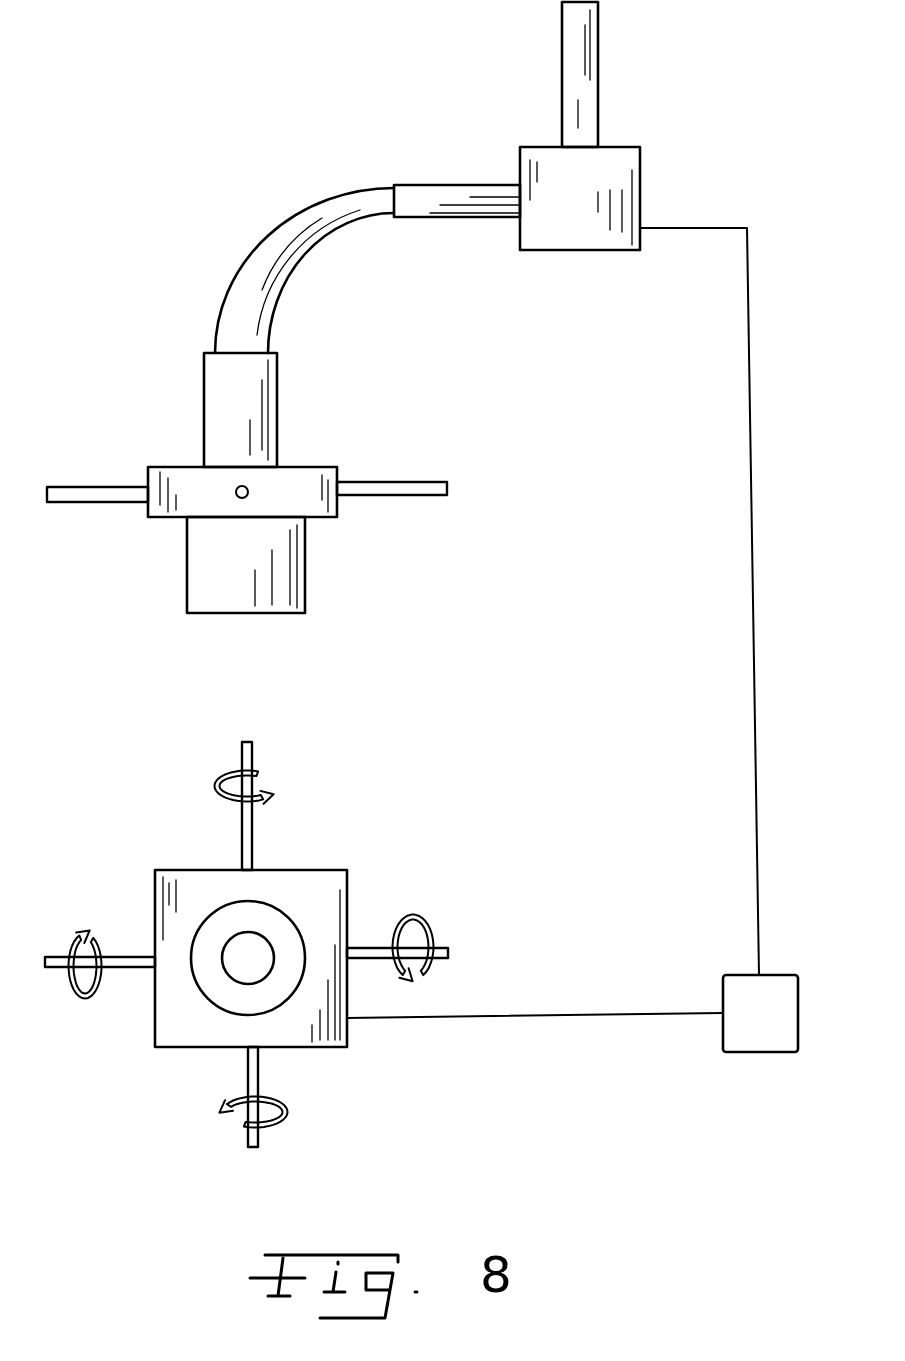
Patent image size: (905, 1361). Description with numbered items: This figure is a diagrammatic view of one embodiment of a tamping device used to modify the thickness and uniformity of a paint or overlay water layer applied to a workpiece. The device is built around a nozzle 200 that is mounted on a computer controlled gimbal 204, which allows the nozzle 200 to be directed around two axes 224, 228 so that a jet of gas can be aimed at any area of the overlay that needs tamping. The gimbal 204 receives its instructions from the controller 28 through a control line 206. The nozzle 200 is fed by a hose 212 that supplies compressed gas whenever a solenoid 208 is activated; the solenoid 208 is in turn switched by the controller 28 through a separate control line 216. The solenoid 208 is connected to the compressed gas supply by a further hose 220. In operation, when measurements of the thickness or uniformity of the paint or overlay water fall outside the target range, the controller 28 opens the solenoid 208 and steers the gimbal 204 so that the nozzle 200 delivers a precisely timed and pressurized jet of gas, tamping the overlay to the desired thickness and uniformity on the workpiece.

The hose 220 is at (583, 74).
The control line 216 is at (700, 226).
The solenoid 208 is at (596, 233).
The hose 212 is at (297, 260).
The computer controlled gimbal 204 is at (312, 472).
The axis 224 is at (433, 480).
The axis 228 is at (237, 492).
The nozzle 200 is at (292, 582).
The control line 206 is at (447, 1020).
The controller 28 is at (782, 1027).